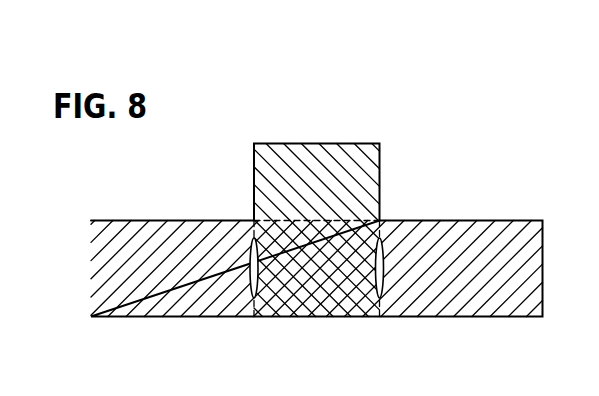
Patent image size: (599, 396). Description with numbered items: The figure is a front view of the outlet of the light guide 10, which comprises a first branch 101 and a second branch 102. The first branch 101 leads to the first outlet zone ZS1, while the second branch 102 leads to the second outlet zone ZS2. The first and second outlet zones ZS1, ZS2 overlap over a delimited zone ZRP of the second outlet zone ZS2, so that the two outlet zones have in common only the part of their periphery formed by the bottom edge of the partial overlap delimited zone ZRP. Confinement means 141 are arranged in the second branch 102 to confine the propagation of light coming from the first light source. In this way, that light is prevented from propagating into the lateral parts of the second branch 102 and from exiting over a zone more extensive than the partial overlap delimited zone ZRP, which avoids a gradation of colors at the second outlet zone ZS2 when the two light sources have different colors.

The light guide 10 is at (262, 94).
The first branch 101 is at (253, 167).
The second branch 102 is at (91, 270).
The confinement means 141 is at (250, 268).
The first outlet zone ZS1 is at (344, 163).
The second outlet zone ZS2 is at (485, 302).
The partial overlap delimited zone ZRP is at (310, 288).